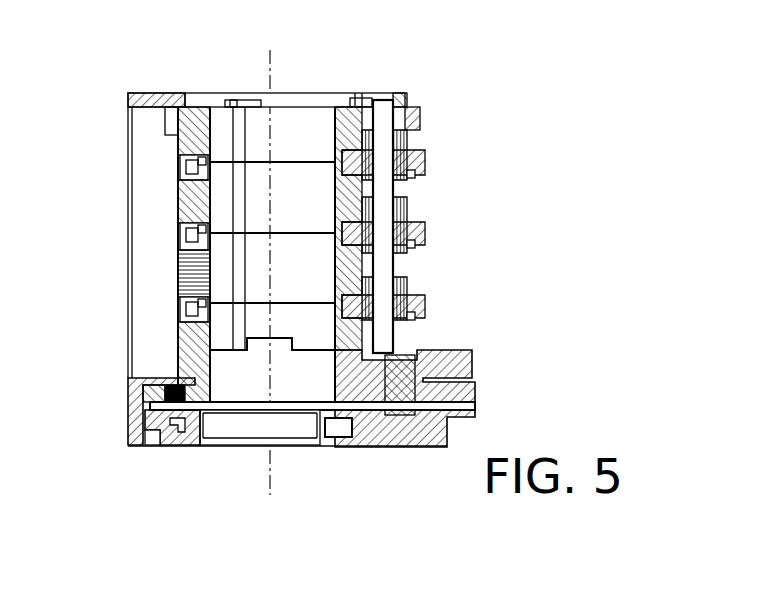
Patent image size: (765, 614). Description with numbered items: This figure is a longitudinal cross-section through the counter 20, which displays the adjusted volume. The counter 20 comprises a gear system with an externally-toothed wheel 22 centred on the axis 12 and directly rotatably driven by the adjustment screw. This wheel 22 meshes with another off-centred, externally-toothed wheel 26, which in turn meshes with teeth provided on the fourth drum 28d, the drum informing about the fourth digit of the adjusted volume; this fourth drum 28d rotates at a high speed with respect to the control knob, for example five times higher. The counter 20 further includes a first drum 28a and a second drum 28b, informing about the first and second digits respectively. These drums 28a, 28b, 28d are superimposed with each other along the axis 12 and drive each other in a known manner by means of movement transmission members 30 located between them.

The counter 20 is at (392, 75).
The axis 12 is at (270, 485).
The externally-toothed wheel 22 is at (193, 445).
The off-centred externally-toothed wheel 26 is at (470, 390).
The first drum 28a is at (193, 127).
The second drum 28b is at (192, 199).
The fourth drum 28d is at (190, 268).
The movement transmission members 30 is at (425, 305).